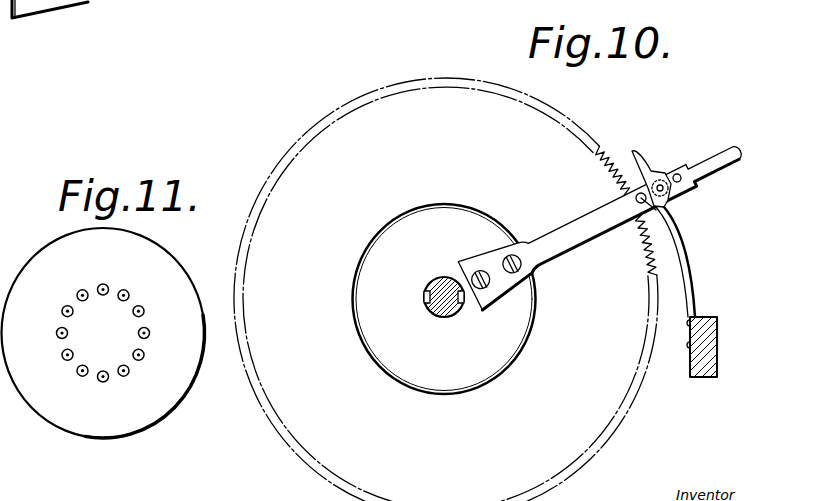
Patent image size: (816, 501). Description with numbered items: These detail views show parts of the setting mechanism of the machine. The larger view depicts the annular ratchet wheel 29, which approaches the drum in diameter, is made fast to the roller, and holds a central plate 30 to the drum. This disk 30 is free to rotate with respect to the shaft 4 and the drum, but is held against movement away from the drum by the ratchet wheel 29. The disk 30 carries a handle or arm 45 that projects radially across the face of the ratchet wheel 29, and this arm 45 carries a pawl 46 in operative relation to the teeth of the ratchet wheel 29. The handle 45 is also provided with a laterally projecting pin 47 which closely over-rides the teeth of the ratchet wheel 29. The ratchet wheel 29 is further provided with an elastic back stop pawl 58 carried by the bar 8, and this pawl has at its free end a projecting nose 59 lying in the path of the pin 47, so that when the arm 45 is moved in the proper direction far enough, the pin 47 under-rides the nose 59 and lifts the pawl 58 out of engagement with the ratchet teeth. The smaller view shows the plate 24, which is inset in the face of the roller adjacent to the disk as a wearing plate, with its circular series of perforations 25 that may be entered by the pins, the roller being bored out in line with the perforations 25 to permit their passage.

In FIG. 10, the shaft 4 is at (435, 277).
In FIG. 10, the bar 8 is at (710, 378).
In FIG. 11, the plate 24 is at (148, 413).
In FIG. 11, the perforations 25 is at (142, 309).
In FIG. 10, the annular ratchet wheel 29 is at (600, 165).
In FIG. 10, the central plate 30 is at (413, 353).
In FIG. 10, the handle or arm 45 is at (584, 236).
In FIG. 10, the pawl 46 is at (641, 160).
In FIG. 10, the laterally projecting pin 47 is at (664, 195).
In FIG. 10, the elastic back stop pawl 58 is at (690, 270).
In FIG. 10, the projecting nose 59 is at (630, 183).